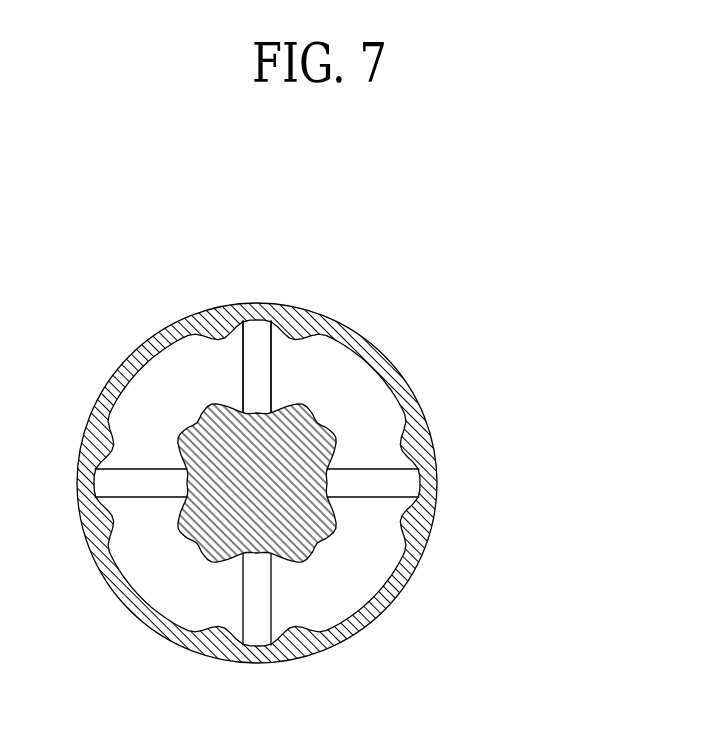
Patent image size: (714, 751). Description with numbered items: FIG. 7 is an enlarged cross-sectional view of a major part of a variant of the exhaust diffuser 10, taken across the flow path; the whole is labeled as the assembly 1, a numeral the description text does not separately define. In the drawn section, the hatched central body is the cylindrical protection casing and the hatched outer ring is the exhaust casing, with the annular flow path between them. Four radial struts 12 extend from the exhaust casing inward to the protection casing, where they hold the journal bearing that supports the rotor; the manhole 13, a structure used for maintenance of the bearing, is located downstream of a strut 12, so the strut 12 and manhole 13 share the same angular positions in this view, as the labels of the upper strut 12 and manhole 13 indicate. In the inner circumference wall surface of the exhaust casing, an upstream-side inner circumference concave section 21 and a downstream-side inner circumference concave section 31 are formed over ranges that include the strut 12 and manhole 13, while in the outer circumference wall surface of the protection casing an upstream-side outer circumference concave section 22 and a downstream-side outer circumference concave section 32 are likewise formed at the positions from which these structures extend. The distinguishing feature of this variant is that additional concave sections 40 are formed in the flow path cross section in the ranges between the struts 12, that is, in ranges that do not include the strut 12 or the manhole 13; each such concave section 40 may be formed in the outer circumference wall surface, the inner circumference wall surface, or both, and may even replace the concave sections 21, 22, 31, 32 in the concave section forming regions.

The steering device / assembly 1 is at (578, 180).
The exhaust diffuser 10 is at (478, 258).
The strut 12 is at (272, 377).
The manhole 13 is at (272, 377).
The upstream-side inner circumference concave section 21 is at (284, 347).
The upstream-side outer circumference concave section 22 is at (230, 383).
The downstream-side inner circumference concave section 31 is at (284, 347).
The downstream-side outer circumference concave section 32 is at (230, 383).
The concave section 40 is at (185, 412).